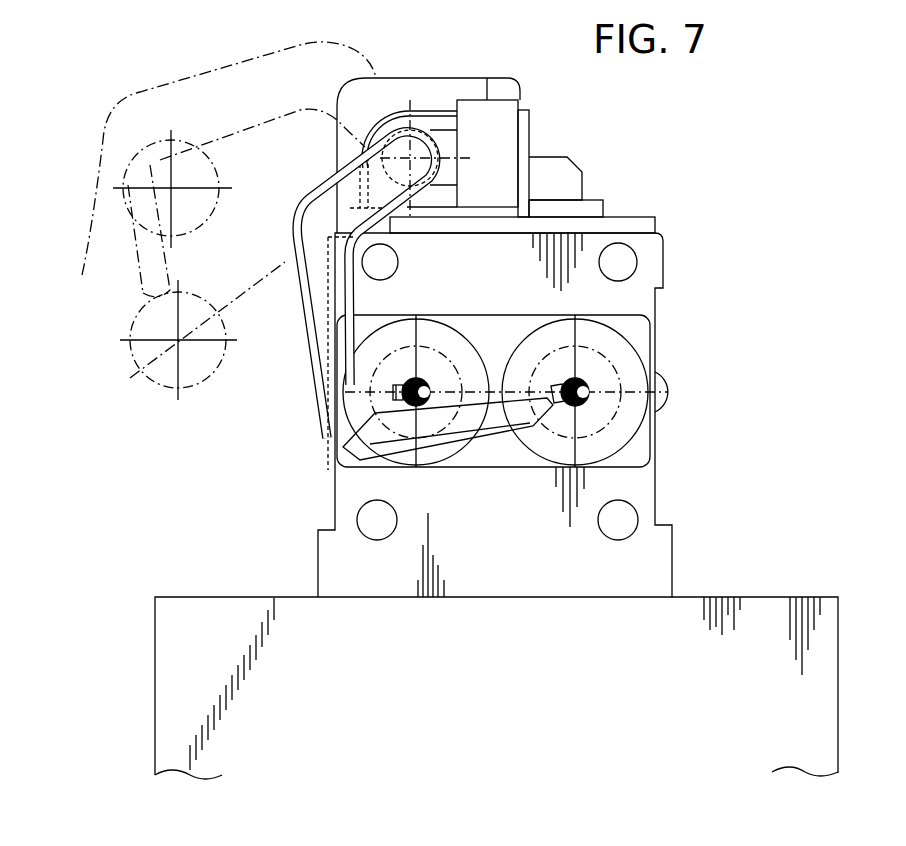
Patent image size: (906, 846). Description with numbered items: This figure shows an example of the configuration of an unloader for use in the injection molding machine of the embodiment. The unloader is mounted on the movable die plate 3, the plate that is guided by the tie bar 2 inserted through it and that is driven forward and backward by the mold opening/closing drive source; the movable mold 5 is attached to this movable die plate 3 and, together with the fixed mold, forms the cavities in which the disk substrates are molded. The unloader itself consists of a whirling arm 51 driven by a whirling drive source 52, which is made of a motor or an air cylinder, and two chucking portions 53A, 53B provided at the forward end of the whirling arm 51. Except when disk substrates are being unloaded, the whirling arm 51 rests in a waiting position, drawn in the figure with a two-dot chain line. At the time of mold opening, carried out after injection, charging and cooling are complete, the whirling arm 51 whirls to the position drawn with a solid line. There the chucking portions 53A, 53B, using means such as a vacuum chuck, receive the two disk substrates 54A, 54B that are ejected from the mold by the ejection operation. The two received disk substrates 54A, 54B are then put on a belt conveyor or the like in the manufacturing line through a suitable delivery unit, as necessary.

The tie bar 2 is at (628, 260).
The movable die plate 3 is at (663, 270).
The movable mold 5 is at (643, 335).
The whirling arm 51 is at (213, 70).
The whirling drive source 52 is at (460, 78).
The chucking portion 53A is at (587, 407).
The chucking portion 53B is at (330, 420).
The disk substrate 54A is at (140, 370).
The disk substrate 54B is at (130, 240).